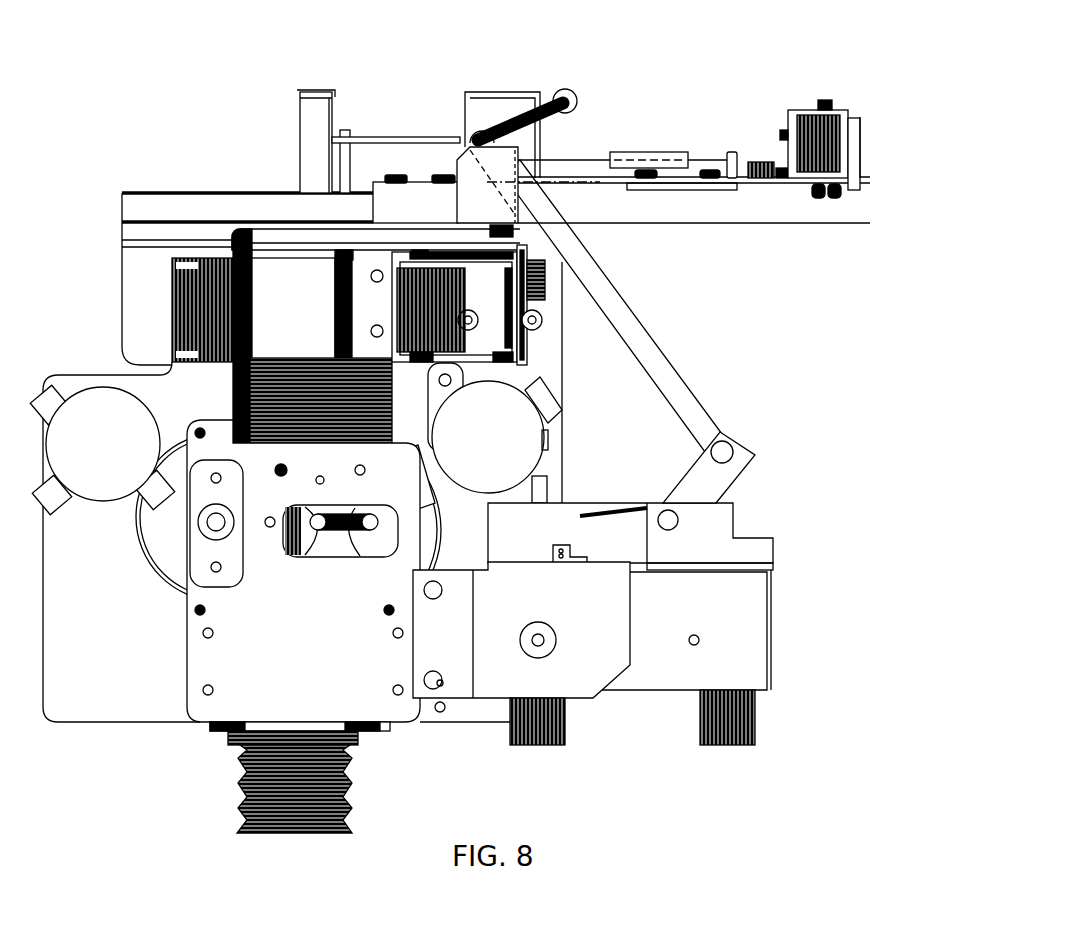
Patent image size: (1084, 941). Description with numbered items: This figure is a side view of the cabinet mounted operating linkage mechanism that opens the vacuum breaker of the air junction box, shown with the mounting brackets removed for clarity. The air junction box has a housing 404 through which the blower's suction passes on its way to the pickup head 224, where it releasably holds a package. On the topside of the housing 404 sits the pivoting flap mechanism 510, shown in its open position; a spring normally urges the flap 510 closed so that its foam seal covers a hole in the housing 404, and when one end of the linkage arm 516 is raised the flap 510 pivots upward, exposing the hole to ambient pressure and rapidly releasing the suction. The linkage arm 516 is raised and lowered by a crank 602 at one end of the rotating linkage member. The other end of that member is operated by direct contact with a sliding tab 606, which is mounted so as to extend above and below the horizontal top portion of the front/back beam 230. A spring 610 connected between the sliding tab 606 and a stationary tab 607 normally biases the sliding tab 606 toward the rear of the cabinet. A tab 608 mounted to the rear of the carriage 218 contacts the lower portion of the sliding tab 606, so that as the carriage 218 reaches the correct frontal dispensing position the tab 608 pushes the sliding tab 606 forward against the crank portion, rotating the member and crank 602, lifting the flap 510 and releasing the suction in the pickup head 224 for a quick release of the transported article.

The carriage 218 is at (130, 697).
The pickup head 224 is at (238, 787).
The front/back beam 230 is at (418, 177).
The housing 404 is at (712, 610).
The pivoting flap mechanism 510 is at (738, 467).
The linkage arm 516 is at (620, 290).
The crank 602 is at (547, 103).
The sliding tab 606 is at (460, 153).
The stationary tab 607 is at (740, 153).
The tab 608 is at (523, 240).
The spring 610 is at (640, 152).